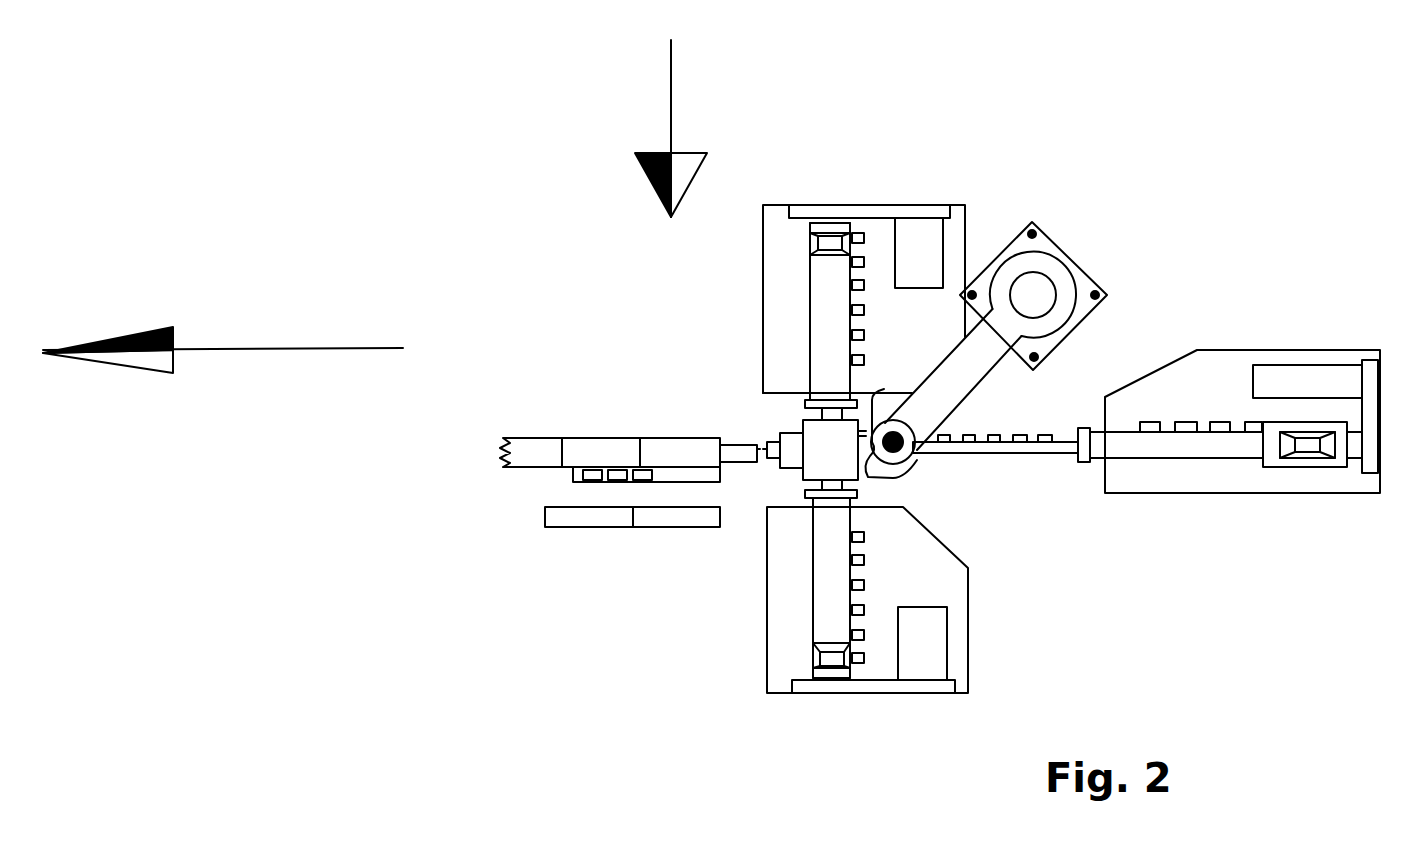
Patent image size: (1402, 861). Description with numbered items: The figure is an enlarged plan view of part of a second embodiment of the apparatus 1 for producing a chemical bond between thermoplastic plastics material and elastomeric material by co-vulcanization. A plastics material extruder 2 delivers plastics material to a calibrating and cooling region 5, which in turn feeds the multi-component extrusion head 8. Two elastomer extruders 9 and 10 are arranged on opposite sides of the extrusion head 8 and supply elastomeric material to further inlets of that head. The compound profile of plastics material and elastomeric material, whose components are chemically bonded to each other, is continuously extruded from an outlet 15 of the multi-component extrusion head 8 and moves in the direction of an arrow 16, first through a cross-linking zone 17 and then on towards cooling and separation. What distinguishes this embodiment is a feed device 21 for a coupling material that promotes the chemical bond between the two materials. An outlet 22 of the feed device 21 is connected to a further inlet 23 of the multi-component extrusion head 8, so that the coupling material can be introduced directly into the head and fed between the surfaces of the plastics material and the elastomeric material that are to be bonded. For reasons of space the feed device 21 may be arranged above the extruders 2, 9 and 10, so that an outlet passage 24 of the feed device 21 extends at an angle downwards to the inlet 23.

The apparatus 1 is at (663, 98).
The plastics material extruder 2 is at (1239, 342).
The calibrating and cooling region 5 is at (1045, 465).
The multi-component extrusion head 8 is at (795, 468).
The elastomer extruder 9 is at (758, 213).
The elastomer extruder 10 is at (760, 697).
The outlet 15 is at (750, 442).
The arrow 16 is at (323, 345).
The cross-linking zone 17 is at (512, 472).
The feed device 21 is at (1080, 253).
The outlet 22 is at (917, 462).
The inlet 23 is at (920, 347).
The outlet passage 24 is at (957, 378).